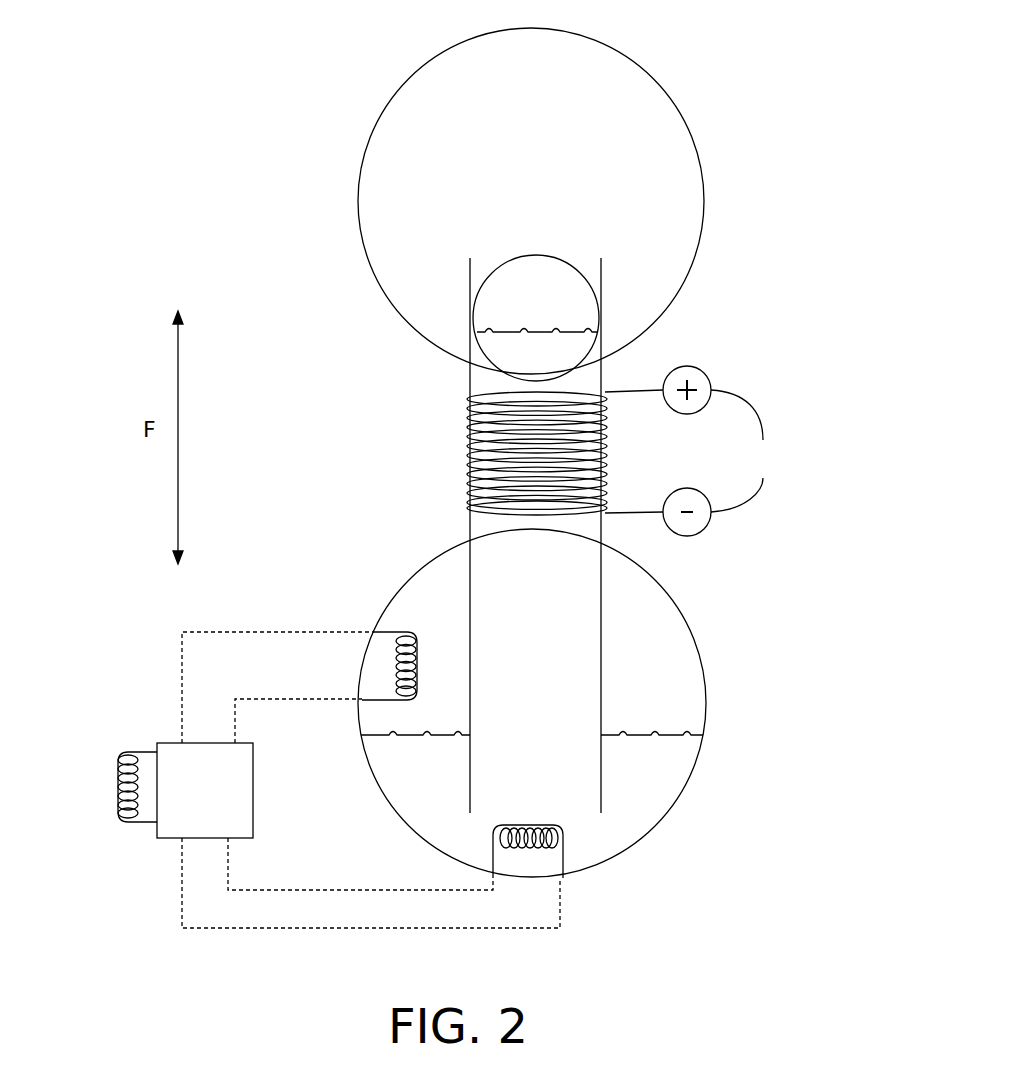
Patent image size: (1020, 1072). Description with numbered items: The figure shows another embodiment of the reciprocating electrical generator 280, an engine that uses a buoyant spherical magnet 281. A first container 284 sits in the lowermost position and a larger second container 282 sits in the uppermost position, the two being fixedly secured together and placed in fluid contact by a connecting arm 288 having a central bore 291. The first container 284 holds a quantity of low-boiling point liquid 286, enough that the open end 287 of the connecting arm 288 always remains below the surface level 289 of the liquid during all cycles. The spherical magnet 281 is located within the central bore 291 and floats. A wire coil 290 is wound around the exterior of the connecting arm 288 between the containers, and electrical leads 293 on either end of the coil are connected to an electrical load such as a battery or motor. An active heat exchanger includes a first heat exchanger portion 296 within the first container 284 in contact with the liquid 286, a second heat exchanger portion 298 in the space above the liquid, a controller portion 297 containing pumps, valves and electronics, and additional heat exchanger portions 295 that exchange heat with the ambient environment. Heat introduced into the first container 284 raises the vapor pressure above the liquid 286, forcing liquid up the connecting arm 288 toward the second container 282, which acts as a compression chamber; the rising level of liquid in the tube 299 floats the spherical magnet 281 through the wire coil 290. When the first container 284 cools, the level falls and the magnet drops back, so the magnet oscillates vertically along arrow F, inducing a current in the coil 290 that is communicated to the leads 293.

The reciprocating electrical generator 280 is at (208, 156).
The spherical magnet 281 is at (518, 255).
The second container 282 is at (705, 192).
The first container 284 is at (707, 703).
The low-boiling point liquid 286 is at (607, 830).
The open end 287 is at (468, 772).
The connecting arm 288 is at (470, 592).
The surface level 289 is at (670, 740).
The wire coil 290 is at (466, 425).
The central bore 291 is at (573, 630).
The electrical leads 293 is at (694, 451).
The additional heat exchanger portions 295 is at (118, 790).
The first heat exchanger portion 296 is at (525, 825).
The controller portion 297 is at (253, 797).
The second heat exchanger portion 298 is at (395, 670).
The rising level of liquid in the tube 299 is at (537, 328).